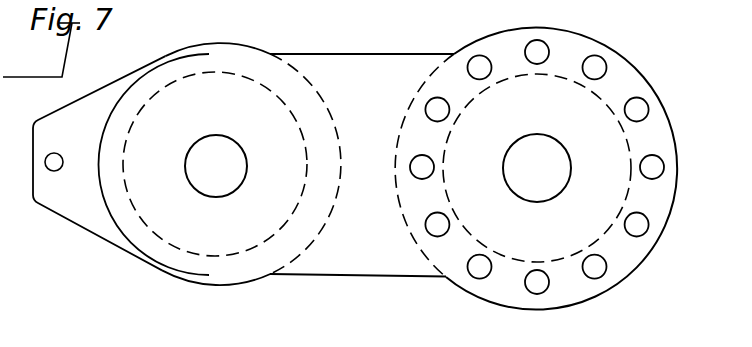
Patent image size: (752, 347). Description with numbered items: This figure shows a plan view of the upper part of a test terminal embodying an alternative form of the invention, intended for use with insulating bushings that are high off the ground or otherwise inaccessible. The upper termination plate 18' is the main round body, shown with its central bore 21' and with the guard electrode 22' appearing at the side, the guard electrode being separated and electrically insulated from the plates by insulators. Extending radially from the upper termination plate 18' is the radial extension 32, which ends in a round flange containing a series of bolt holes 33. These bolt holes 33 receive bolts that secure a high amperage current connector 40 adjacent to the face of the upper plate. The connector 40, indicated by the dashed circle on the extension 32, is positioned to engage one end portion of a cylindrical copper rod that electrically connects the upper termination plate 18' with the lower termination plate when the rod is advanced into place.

The upper termination plate 18' is at (203, 164).
The shaft bore 21' is at (208, 184).
The guard electrode 22' is at (99, 163).
The radial extension 32 is at (349, 38).
The bolt holes 33 is at (633, 100).
The high amperage current connector 40 is at (613, 142).